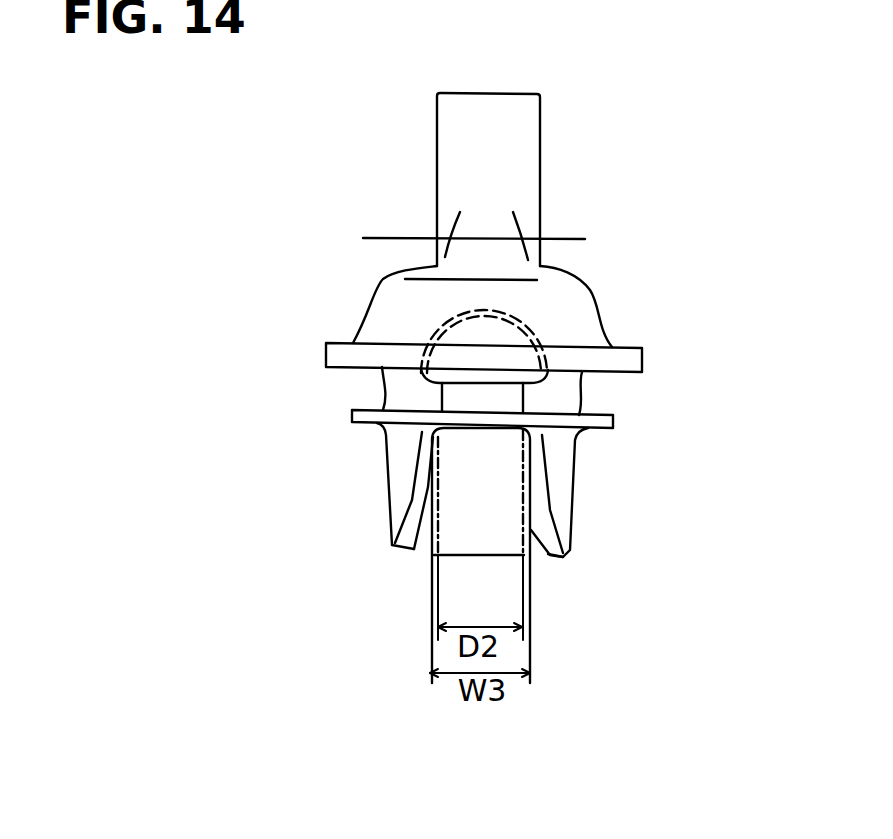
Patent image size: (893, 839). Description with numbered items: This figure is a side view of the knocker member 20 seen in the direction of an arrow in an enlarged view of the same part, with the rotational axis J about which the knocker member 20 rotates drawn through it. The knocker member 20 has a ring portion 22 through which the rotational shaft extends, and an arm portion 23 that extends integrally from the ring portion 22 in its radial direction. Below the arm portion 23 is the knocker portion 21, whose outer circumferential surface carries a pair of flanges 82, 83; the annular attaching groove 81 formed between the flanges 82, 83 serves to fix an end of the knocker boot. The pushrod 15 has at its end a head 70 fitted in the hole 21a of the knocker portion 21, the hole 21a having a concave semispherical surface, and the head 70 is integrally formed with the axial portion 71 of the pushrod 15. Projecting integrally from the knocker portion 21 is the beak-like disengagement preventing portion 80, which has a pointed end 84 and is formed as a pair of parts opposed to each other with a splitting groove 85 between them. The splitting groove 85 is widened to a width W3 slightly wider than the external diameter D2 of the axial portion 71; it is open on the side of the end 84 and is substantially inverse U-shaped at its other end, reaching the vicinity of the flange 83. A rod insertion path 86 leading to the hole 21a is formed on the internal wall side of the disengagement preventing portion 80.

The knocker member 20 is at (392, 128).
The knocker portion 21 is at (598, 312).
The hole 21a is at (543, 351).
The ring portion 22 is at (540, 141).
The arm portion 23 is at (460, 222).
The head 70 is at (463, 330).
The axial portion 71 is at (431, 550).
The disengagement preventing portion 80 is at (388, 462).
The attaching groove 81 is at (381, 388).
The flange 82 is at (337, 350).
The flange 83 is at (350, 415).
The end of the projection 84 is at (402, 551).
The splitting groove 85 is at (462, 528).
The rod insertion path 86 is at (539, 451).
The pushrod 15 is at (480, 566).
The rotational axis J is at (465, 222).